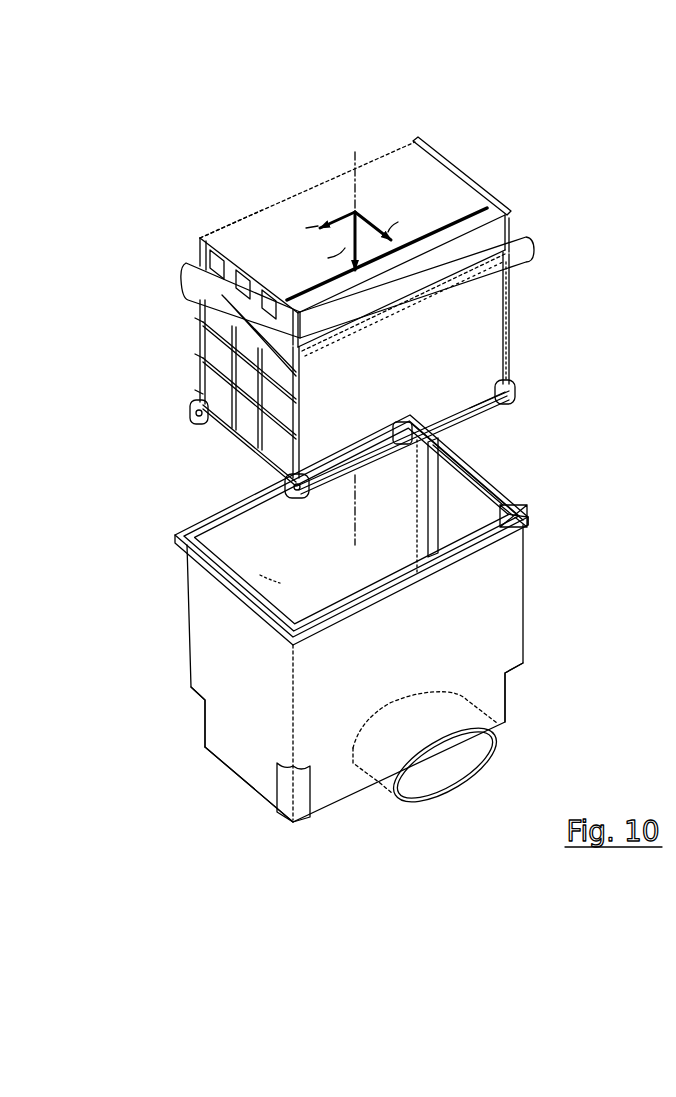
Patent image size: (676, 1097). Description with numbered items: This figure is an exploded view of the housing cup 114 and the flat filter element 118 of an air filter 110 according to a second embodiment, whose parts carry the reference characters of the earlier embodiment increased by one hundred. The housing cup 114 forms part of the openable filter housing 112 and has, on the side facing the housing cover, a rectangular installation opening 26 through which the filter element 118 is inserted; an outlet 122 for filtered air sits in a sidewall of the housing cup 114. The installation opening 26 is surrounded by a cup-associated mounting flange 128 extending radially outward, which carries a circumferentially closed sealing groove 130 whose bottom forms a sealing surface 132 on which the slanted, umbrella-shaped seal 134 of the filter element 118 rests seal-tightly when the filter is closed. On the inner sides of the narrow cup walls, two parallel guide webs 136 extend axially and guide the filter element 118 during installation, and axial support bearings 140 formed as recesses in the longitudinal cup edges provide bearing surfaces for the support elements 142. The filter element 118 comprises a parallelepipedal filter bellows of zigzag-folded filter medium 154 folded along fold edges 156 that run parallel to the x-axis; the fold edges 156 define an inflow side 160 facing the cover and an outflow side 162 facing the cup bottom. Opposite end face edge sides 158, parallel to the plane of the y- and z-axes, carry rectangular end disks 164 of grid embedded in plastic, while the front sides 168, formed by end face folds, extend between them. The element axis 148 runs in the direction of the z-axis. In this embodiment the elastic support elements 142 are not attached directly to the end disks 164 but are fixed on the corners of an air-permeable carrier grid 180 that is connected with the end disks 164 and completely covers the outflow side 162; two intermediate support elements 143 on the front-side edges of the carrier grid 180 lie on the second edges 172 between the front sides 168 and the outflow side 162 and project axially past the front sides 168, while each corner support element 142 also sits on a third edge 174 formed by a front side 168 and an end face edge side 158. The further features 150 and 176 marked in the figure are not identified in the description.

The air filter 110 is at (122, 137).
The filter housing 112 is at (188, 625).
The housing cup 114 is at (250, 753).
The filter element 118 is at (197, 347).
The outlet 122 is at (457, 763).
The cup-associated mounting flange 128 is at (178, 543).
The sealing groove 130 is at (492, 548).
The sealing surface 132 is at (530, 527).
The seal 134 is at (197, 278).
The guide webs 136 is at (430, 542).
The support bearings 140 is at (203, 720).
The support elements 142 is at (197, 420).
The intermediate support elements 143 is at (396, 428).
The element axis 148 is at (345, 180).
The filter panel 150 is at (490, 332).
The filter medium 154 is at (490, 293).
The fold edges 156 is at (482, 207).
The end face edge sides 158 is at (230, 247).
The inflow side 160 is at (392, 178).
The outflow side 162 is at (472, 416).
The end disks 164 is at (207, 377).
The front sides 168 is at (278, 200).
The second edge 172 is at (350, 470).
The third edge 174 is at (503, 300).
The foot peg 176 is at (196, 412).
The carrier grid 180 is at (347, 483).
The installation opening 26 is at (272, 570).